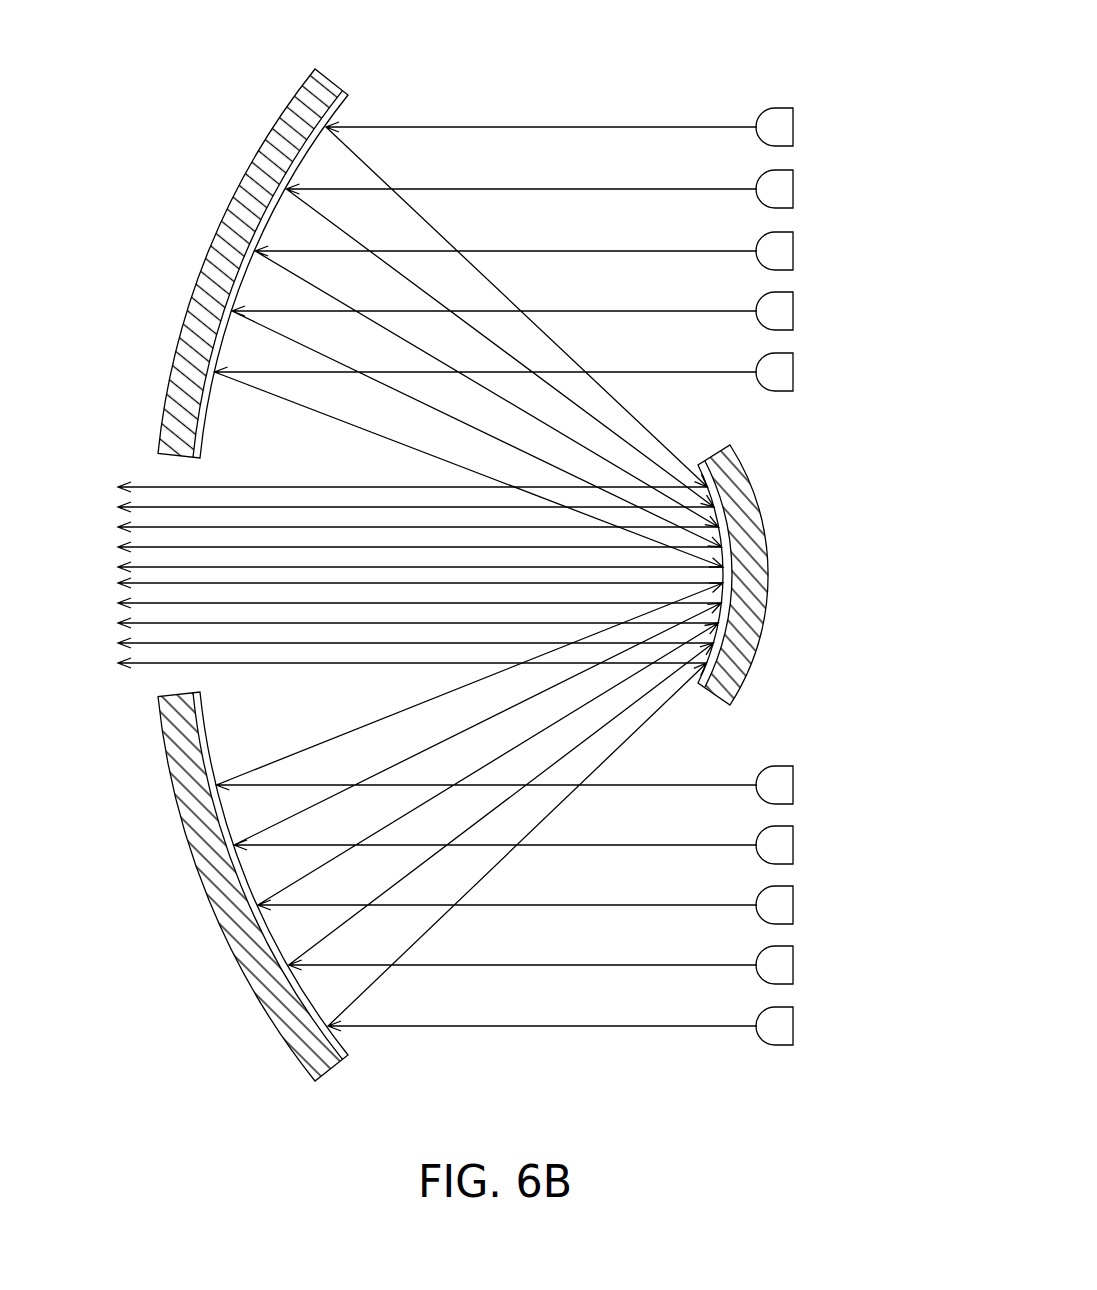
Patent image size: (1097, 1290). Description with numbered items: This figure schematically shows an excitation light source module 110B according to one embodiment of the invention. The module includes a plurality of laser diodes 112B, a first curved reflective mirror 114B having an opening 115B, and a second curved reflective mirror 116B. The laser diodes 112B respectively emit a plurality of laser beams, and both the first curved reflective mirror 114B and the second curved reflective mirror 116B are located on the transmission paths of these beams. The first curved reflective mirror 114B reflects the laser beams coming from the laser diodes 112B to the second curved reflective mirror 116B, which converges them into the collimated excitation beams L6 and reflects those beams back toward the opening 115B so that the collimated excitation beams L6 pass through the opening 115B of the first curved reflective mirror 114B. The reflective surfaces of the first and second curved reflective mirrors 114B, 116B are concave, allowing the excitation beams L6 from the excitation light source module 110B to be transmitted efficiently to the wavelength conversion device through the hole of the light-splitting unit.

The excitation light source module 110B is at (826, 1147).
The laser diodes 112B is at (787, 85).
The first curved reflective mirror 114B is at (274, 135).
The opening 115B is at (169, 460).
The second curved reflective mirror 116B is at (752, 586).
The collimated excitation beams L6 is at (327, 487).